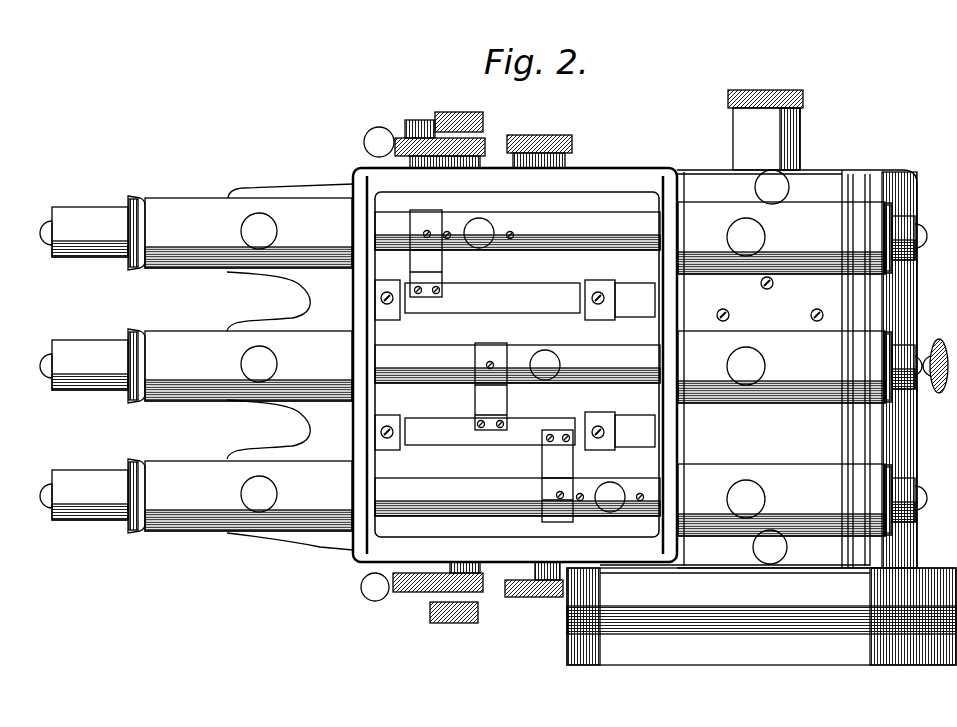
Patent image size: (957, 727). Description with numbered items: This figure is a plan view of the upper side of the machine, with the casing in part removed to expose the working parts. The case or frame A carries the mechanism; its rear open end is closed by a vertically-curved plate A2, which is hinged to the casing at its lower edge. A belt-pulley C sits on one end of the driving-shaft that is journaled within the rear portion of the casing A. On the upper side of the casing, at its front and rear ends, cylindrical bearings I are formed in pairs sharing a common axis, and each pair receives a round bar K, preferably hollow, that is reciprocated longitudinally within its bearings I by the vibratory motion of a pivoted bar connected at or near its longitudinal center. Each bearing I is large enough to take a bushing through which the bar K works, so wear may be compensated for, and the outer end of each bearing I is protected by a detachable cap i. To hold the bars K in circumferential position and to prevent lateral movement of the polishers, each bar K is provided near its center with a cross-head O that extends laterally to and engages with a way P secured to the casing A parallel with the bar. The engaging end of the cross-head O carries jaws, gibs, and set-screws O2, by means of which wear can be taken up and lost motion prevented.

The case or frame A is at (572, 356).
The vertically-curved plate A2 is at (905, 326).
The belt-pulley C is at (761, 616).
The cylindrical bearings I is at (477, 366).
The detachable cap i is at (517, 361).
The round bar K is at (517, 364).
The way P is at (515, 365).
The cross-head O is at (491, 366).
The set-screws O2 is at (491, 435).